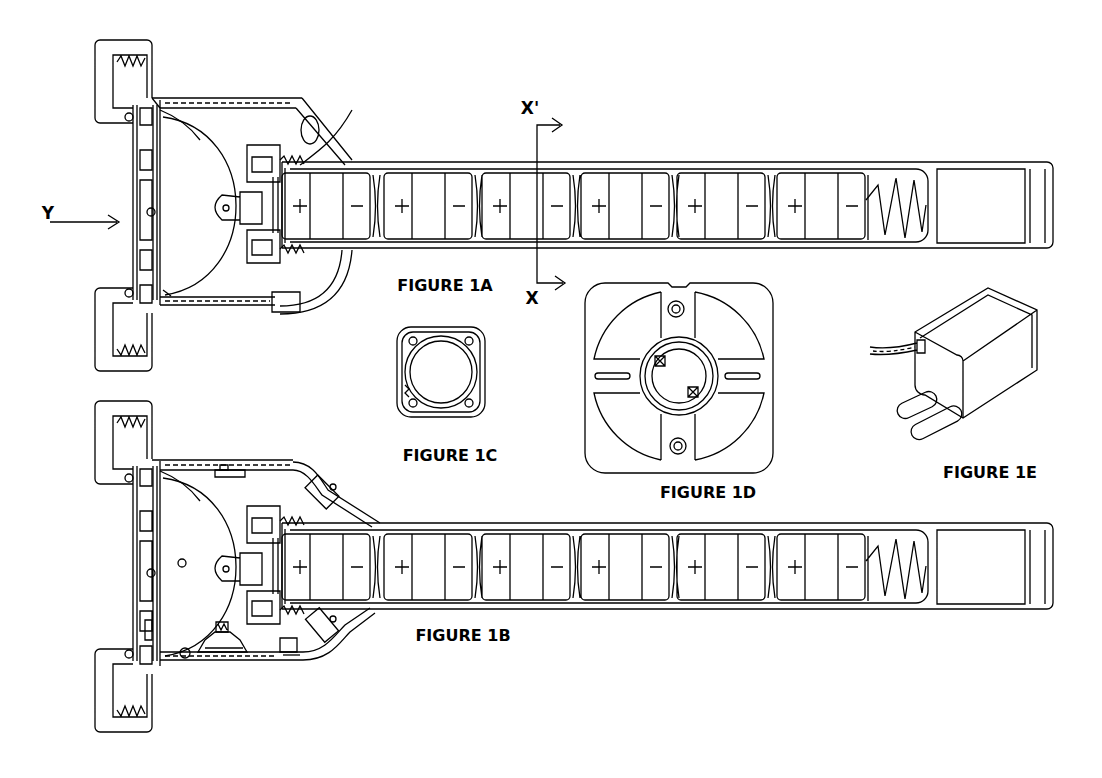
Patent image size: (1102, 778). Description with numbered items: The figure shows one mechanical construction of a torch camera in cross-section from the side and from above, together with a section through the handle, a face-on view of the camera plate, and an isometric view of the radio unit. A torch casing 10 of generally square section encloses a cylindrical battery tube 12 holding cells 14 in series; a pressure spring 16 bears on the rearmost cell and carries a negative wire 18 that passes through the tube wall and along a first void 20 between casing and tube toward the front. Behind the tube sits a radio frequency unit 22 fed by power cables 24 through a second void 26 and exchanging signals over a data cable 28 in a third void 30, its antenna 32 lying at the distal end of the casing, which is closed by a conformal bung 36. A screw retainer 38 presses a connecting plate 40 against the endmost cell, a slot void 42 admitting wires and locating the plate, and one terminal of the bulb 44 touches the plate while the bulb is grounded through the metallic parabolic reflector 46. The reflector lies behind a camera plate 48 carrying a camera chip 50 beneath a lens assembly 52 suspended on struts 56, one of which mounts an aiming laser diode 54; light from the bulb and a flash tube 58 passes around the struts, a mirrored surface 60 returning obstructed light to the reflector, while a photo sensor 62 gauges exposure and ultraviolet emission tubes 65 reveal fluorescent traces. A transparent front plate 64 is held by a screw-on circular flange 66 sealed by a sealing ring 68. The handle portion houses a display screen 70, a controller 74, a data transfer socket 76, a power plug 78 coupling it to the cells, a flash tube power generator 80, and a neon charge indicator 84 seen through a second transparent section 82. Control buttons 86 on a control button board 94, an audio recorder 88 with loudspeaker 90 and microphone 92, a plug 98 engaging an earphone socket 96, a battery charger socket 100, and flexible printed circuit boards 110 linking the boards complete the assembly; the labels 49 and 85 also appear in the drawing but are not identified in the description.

In FIG. 1A, the torch casing 10 is at (445, 162).
In FIG. 1C, the torch casing 10 is at (487, 357).
In FIG. 1A, the battery tube 12 is at (333, 245).
In FIG. 1C, the battery tube 12 is at (473, 390).
In FIG. 1A, the cells 14 is at (827, 190).
In FIG. 1A, the pressure spring 16 is at (890, 235).
In FIG. 1A, the negative wire 18 is at (910, 180).
In FIG. 1C, the negative wire 18 is at (402, 343).
In FIG. 1A, the first void 20 is at (609, 205).
In FIG. 1C, the first void 20 is at (402, 350).
In FIG. 1A, the radio frequency unit 22 is at (965, 170).
In FIG. 1E, the radio frequency unit 22 is at (993, 322).
In FIG. 1C, the radio frequency unit power cables 24 is at (475, 340).
In FIG. 1E, the radio frequency unit power cables 24 is at (882, 344).
In FIG. 1C, the second void 26 is at (470, 330).
In FIG. 1C, the data cable 28 is at (402, 407).
In FIG. 1E, the data cable 28 is at (902, 405).
In FIG. 1C, the third void 30 is at (400, 393).
In FIG. 1E, the antenna 32 is at (947, 422).
In FIG. 1A, the conformal bung 36 is at (1043, 172).
In FIG. 1B, the conformal bung 36 is at (1045, 537).
In FIG. 1A, the screw retainer 38 is at (257, 145).
In FIG. 1A, the connecting plate 40 is at (283, 222).
In FIG. 1A, the slot void 42 is at (335, 128).
In FIG. 1A, the bulb 44 is at (217, 217).
In FIG. 1A, the parabolic reflector 46 is at (187, 133).
In FIG. 1A, the camera plate 48 is at (158, 113).
In FIG. 1D, the camera plate 48 is at (760, 315).
In FIG. 1A, the conductor 49 is at (339, 113).
In FIG. 1A, the camera chip 50 is at (133, 237).
In FIG. 1A, the lens assembly 52 is at (133, 180).
In FIG. 1A, the laser diode 54 is at (133, 162).
In FIG. 1D, the laser diode 54 is at (670, 303).
In FIG. 1D, the struts 56 is at (668, 328).
In FIG. 1A, the flash tube 58 is at (183, 190).
In FIG. 1B, the flash tube 58 is at (183, 560).
In FIG. 1A, the mirrored surface 60 is at (175, 263).
In FIG. 1D, the photo sensor 62 is at (695, 350).
In FIG. 1A, the transparent front plate 64 is at (133, 247).
In FIG. 1B, the ultraviolet emission tubes 65 is at (150, 625).
In FIG. 1D, the ultraviolet emission tubes 65 is at (600, 376).
In FIG. 1A, the screw-on circular flange 66 is at (148, 37).
In FIG. 1B, the screw-on circular flange 66 is at (123, 566).
In FIG. 1A, the sealing ring 68 is at (123, 122).
In FIG. 1B, the sealing ring 68 is at (129, 566).
In FIG. 1A, the display screen 70 is at (250, 100).
In FIG. 1A, the controller 74 is at (217, 307).
In FIG. 1B, the controller 74 is at (267, 634).
In FIG. 1A, the data transfer socket 76 is at (275, 312).
In FIG. 1A, the power plug 78 is at (298, 105).
In FIG. 1B, the flash tube power generator 80 is at (262, 470).
In FIG. 1A, the second transparent section 82 is at (133, 273).
In FIG. 1B, the second transparent section 82 is at (228, 469).
In FIG. 1B, the neon charge indicator 84 is at (220, 464).
In FIG. 1A, the pivot pin 85 is at (147, 212).
In FIG. 1B, the pivot pin 85 is at (152, 502).
In FIG. 1B, the control buttons 86 is at (227, 665).
In FIG. 1B, the solid state audio recorder 88 is at (283, 658).
In FIG. 1B, the miniature loudspeaker 90 is at (247, 658).
In FIG. 1B, the microphone 92 is at (190, 656).
In FIG. 1B, the control button board 94 is at (267, 665).
In FIG. 1B, the earphone socket 96 is at (330, 643).
In FIG. 1B, the plug 98 is at (288, 655).
In FIG. 1B, the battery charger socket 100 is at (335, 495).
In FIG. 1A, the flexible printed circuit boards 110 is at (155, 108).
In FIG. 1B, the flexible printed circuit boards 110 is at (157, 478).